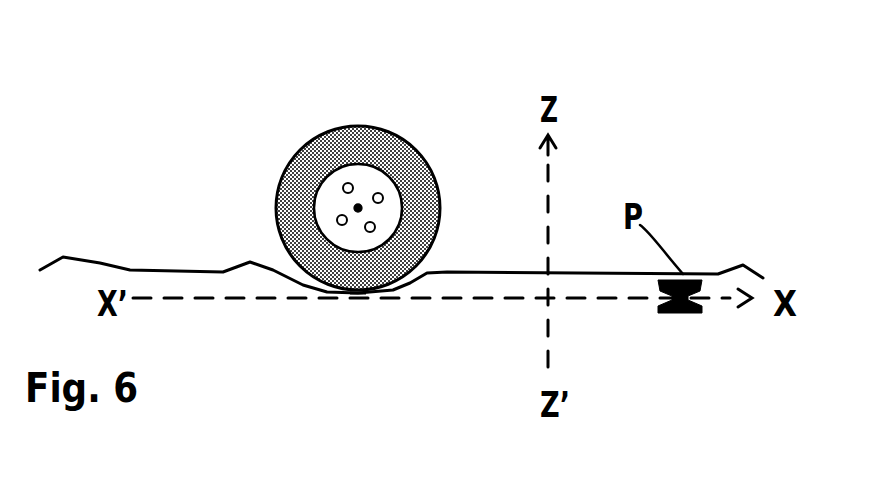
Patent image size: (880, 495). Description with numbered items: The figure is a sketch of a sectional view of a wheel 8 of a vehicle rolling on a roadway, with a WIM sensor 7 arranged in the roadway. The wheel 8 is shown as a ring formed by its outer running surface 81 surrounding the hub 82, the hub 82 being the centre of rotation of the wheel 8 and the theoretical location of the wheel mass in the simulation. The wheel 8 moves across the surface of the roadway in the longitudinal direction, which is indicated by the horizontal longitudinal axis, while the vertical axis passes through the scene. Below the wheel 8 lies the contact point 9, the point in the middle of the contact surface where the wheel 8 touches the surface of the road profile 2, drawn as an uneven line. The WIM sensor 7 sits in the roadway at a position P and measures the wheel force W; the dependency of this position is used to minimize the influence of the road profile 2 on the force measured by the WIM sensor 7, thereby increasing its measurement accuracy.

The road profile 2 is at (183, 267).
The wheel 8 is at (336, 145).
The running surface 81 is at (293, 153).
The hub 82 is at (360, 190).
The contact point 9 is at (362, 297).
The WIM sensor 7 is at (680, 317).